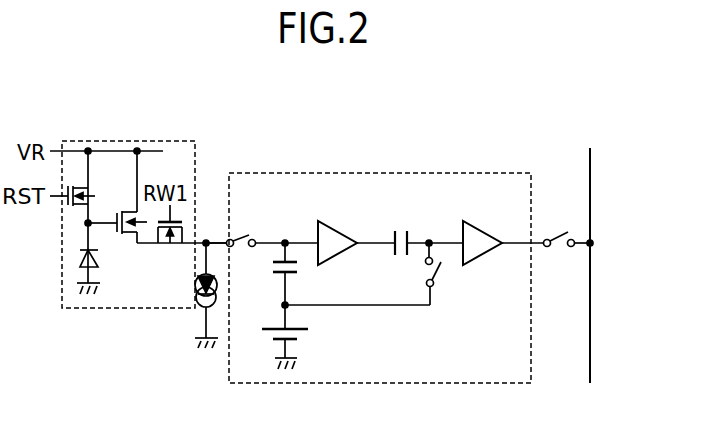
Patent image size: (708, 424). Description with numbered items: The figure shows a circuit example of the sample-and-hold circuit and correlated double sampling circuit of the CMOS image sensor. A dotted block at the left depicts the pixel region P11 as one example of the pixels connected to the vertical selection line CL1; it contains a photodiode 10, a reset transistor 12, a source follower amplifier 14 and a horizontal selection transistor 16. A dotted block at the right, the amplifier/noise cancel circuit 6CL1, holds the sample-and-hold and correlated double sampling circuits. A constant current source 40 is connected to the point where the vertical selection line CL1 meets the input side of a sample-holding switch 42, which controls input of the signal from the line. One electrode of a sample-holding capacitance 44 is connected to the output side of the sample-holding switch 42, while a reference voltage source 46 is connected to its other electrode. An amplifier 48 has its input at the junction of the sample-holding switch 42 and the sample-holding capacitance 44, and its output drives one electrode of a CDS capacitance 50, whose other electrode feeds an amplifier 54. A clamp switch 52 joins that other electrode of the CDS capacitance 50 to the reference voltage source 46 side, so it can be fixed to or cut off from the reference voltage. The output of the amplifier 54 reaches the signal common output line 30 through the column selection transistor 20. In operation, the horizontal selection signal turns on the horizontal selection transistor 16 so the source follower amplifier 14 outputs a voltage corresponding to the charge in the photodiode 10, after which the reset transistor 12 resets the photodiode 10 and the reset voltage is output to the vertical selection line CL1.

The photodiode 10 is at (78, 257).
The reset transistor 12 is at (72, 207).
The source follower amplifier 14 is at (128, 238).
The horizontal selection transistor 16 is at (170, 250).
The column selection transistor 20 is at (560, 230).
The signal common output line 30 is at (592, 188).
The constant current source 40 is at (196, 307).
The sample-holding switch 42 is at (249, 233).
The sample-holding capacitance 44 is at (300, 272).
The reference voltage source 46 is at (303, 337).
The amplifier 48 is at (342, 226).
The CDS capacitance 50 is at (402, 228).
The clamp switch 52 is at (442, 278).
The amplifier 54 is at (488, 227).
The pixel region P11 is at (131, 140).
The vertical selection line CL1 is at (204, 240).
The amplifier/noise cancel circuit 6CL1 is at (382, 172).